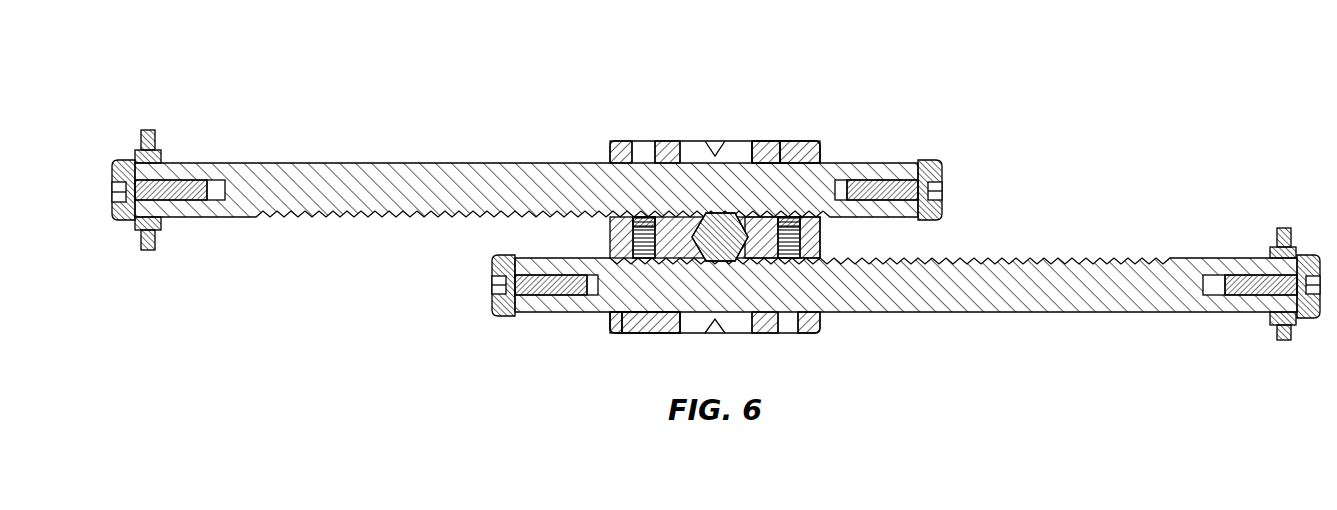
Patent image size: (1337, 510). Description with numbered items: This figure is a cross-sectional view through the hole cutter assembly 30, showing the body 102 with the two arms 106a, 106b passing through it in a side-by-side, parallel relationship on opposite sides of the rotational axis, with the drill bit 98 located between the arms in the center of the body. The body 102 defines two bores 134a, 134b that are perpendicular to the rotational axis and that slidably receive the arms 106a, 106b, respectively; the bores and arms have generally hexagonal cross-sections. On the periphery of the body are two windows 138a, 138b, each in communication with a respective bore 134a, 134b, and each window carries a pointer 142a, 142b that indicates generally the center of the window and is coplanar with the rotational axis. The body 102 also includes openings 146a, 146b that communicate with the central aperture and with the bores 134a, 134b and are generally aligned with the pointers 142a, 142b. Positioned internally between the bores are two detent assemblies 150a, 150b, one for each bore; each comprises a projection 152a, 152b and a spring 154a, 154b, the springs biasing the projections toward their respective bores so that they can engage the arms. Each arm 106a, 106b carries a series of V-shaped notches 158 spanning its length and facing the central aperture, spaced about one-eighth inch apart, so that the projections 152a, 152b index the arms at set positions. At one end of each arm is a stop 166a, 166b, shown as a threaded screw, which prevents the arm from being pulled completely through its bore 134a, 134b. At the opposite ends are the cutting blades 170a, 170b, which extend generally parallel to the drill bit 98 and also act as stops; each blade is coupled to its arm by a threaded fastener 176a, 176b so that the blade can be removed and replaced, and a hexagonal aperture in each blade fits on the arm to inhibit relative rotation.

The hole cutter assembly 30 is at (1109, 100).
The drill bit 98 is at (722, 243).
The body 102 is at (598, 115).
The arm 106a is at (1100, 313).
The arm 106b is at (340, 162).
The bore 134a is at (615, 326).
The bore 134b is at (813, 142).
The window 138a is at (692, 335).
The window 138b is at (733, 132).
The pointer 142a is at (715, 335).
The pointer 142b is at (713, 141).
The opening 146a is at (687, 262).
The opening 146b is at (733, 222).
The detent assembly 150a is at (906, 245).
The detent assembly 150b is at (524, 228).
The projection 152a is at (805, 235).
The projection 152b is at (620, 238).
The spring 154a is at (800, 240).
The spring 154b is at (633, 240).
The notches 158 is at (375, 222).
The stop 166a is at (490, 300).
The stop 166b is at (940, 165).
The cutting blade 170a is at (1283, 228).
The cutting blade 170b is at (145, 130).
The threaded fastener 176a is at (1316, 312).
The threaded fastener 176b is at (122, 220).